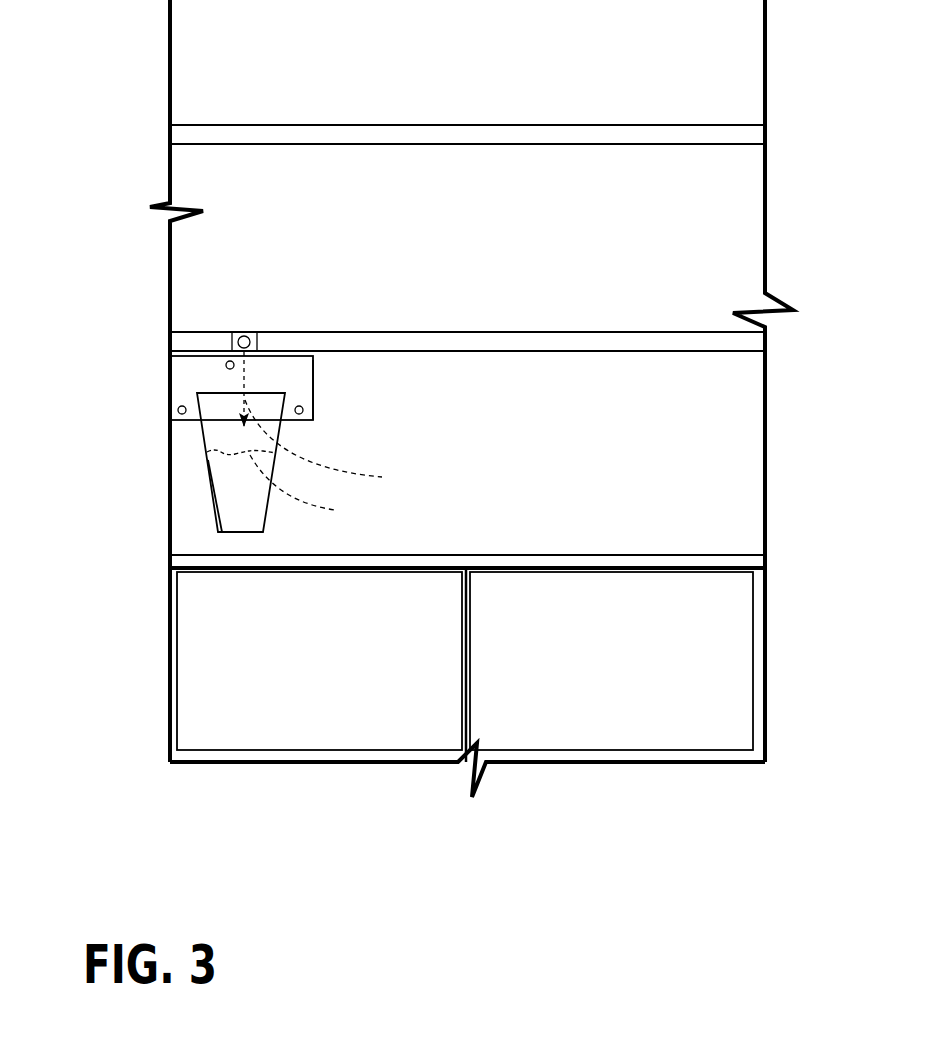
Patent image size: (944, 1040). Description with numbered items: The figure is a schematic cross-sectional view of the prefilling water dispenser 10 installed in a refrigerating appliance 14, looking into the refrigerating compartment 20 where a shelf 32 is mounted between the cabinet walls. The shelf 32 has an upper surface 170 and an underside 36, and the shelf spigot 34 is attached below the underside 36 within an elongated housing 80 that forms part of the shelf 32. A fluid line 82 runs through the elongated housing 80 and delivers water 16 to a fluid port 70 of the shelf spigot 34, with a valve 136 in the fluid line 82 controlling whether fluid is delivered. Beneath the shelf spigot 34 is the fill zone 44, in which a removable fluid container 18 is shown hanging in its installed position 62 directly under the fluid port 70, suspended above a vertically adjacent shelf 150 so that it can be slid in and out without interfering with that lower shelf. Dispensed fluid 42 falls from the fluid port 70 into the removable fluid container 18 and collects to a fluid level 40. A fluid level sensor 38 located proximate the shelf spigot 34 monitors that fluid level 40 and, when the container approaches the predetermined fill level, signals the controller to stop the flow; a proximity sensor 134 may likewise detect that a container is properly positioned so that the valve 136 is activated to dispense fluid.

The prefilling water dispenser 10 is at (148, 330).
The appliance 14 is at (157, 125).
The water 16 is at (331, 446).
The removable fluid container 18 is at (203, 470).
The refrigerating compartment 20 is at (703, 240).
The shelf 32 is at (355, 332).
The shelf spigot 34 is at (185, 378).
The underside of the shelf 36 is at (340, 353).
The fluid level sensor 38 is at (228, 362).
The fluid level 40 is at (309, 490).
The dispensed fluid 42 is at (227, 512).
The fill zone 44 is at (195, 438).
The installed position 62 is at (227, 537).
The fluid port 70 is at (250, 331).
The elongated housing 80 is at (313, 385).
The fluid line 82 is at (251, 342).
The proximity sensor 134 is at (178, 409).
The valve 136 is at (235, 331).
The vertically adjacent shelf 150 is at (485, 562).
The upper surface of the shelf 170 is at (448, 332).